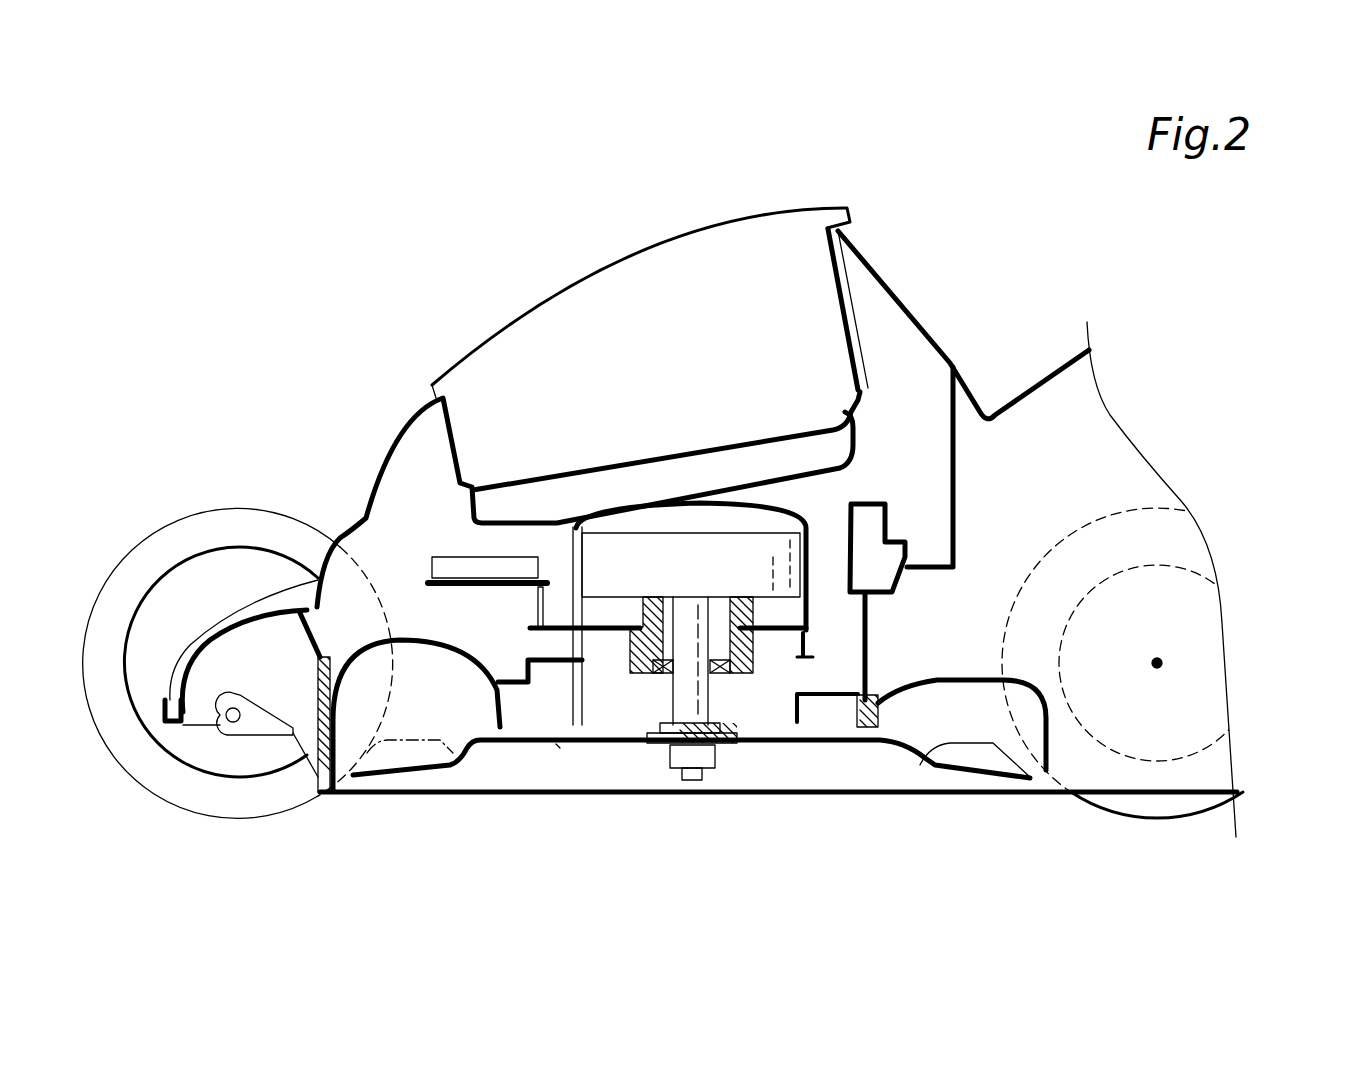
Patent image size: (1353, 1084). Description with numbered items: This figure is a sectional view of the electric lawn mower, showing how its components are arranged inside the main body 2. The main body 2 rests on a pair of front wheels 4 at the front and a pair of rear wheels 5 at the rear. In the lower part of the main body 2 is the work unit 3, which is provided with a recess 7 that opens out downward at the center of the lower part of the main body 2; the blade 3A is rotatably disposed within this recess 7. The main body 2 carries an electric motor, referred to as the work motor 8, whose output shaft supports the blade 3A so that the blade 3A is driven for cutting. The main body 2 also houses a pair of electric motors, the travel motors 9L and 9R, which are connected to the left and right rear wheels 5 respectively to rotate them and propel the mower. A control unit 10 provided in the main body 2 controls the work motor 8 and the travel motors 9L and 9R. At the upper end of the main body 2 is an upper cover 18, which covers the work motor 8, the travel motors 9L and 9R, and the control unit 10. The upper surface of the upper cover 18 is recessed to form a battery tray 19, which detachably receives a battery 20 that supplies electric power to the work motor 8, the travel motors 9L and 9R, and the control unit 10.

The main body 2 is at (243, 622).
The work unit 3 is at (747, 752).
The blade 3A is at (557, 744).
The front wheels 4 is at (178, 790).
The rear wheels 5 is at (1152, 802).
The recess 7 is at (418, 647).
The work motor 8 is at (793, 580).
The travel motor 9L is at (1194, 566).
The travel motor 9R is at (1178, 608).
The control unit 10 is at (452, 558).
The upper cover 18 is at (918, 305).
The battery tray 19 is at (847, 280).
The battery 20 is at (510, 340).